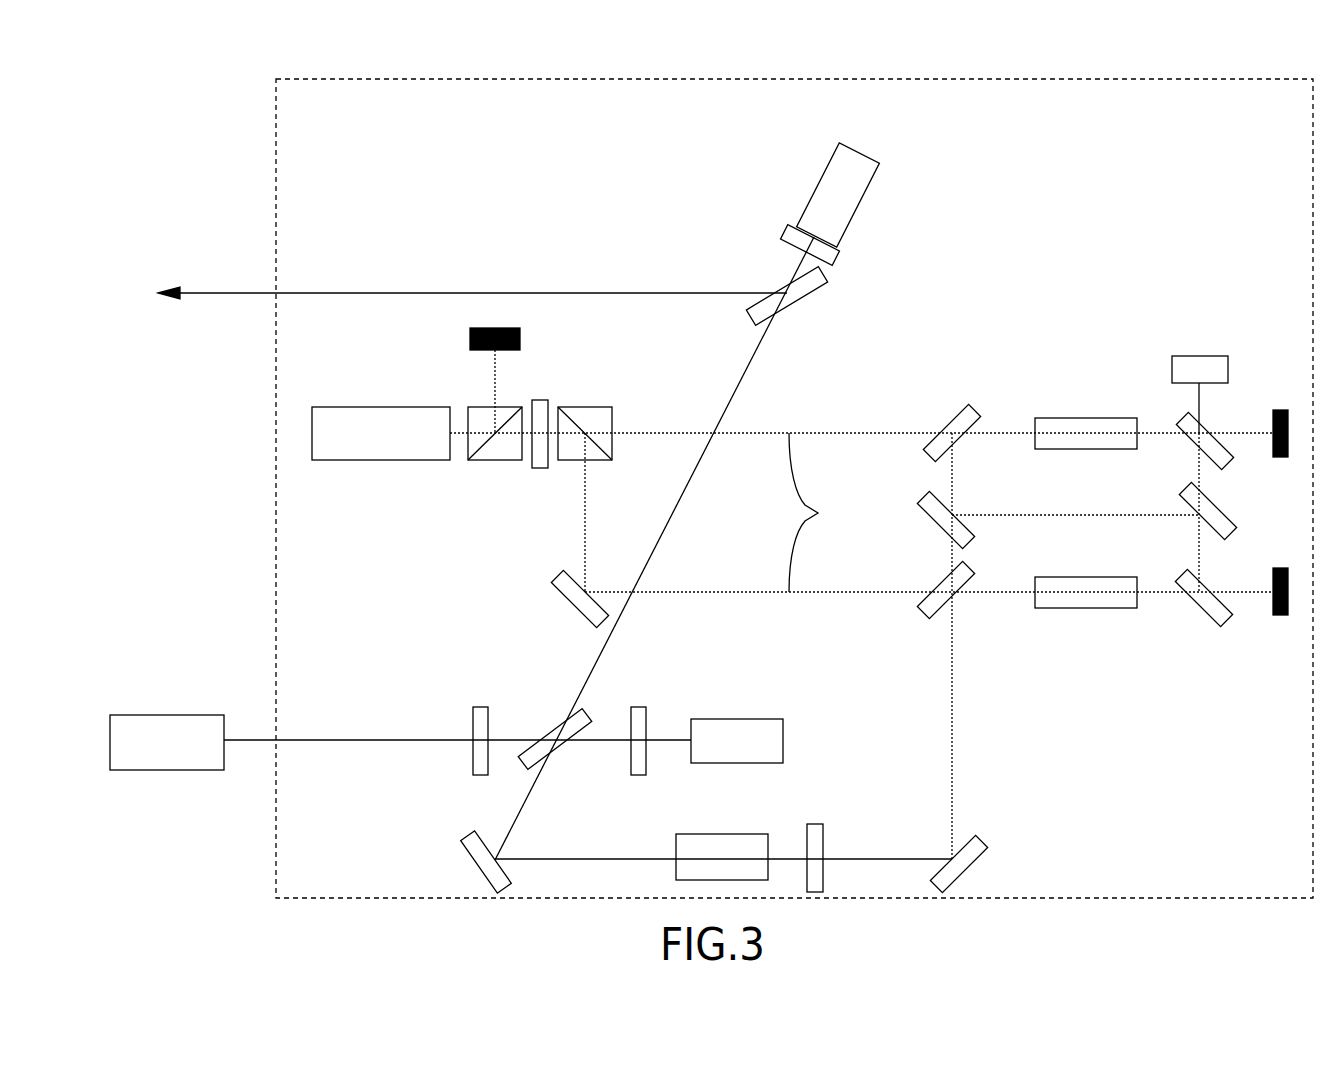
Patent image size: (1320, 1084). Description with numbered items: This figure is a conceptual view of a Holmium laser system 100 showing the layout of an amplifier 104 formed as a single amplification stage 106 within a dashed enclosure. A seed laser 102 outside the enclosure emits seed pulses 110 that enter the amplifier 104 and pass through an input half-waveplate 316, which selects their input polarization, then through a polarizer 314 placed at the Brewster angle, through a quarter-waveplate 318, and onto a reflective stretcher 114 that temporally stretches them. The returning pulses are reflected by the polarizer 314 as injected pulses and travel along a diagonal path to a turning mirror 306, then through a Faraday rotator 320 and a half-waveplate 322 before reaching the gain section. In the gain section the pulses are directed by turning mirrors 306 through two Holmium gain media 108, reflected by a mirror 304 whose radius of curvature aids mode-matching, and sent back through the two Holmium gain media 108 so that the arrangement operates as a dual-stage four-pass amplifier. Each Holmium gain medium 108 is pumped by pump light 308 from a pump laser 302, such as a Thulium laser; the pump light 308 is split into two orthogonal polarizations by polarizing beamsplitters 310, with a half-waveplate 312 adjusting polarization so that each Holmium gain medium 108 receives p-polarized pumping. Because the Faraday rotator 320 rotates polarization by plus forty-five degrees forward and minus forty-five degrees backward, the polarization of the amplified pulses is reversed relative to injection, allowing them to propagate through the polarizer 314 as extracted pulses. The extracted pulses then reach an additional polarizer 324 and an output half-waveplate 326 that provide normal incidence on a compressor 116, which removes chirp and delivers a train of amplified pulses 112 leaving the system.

The Holmium laser system 100 is at (137, 67).
The seed laser 102 is at (187, 754).
The amplifier 104 is at (276, 142).
The amplification stage 106 is at (315, 108).
The Holmium gain medium 108 is at (1086, 418).
The seed pulses 110 is at (356, 740).
The amplified pulses 112 is at (233, 291).
The stretcher 114 is at (740, 719).
The compressor 116 is at (818, 190).
The pump laser 302 is at (400, 445).
The mirror 304 is at (1200, 356).
The turning mirror 306 is at (556, 575).
The pump light 308 is at (826, 512).
The polarizing beamsplitter 310 is at (592, 407).
The half-waveplate 312 is at (541, 400).
The polarizer 314 is at (586, 712).
The input half-waveplate 316 is at (480, 707).
The quarter-waveplate 318 is at (636, 776).
The Faraday rotator 320 is at (722, 834).
The half-waveplate 322 is at (815, 824).
The additional polarizer 324 is at (800, 305).
The output half-waveplate 326 is at (788, 238).